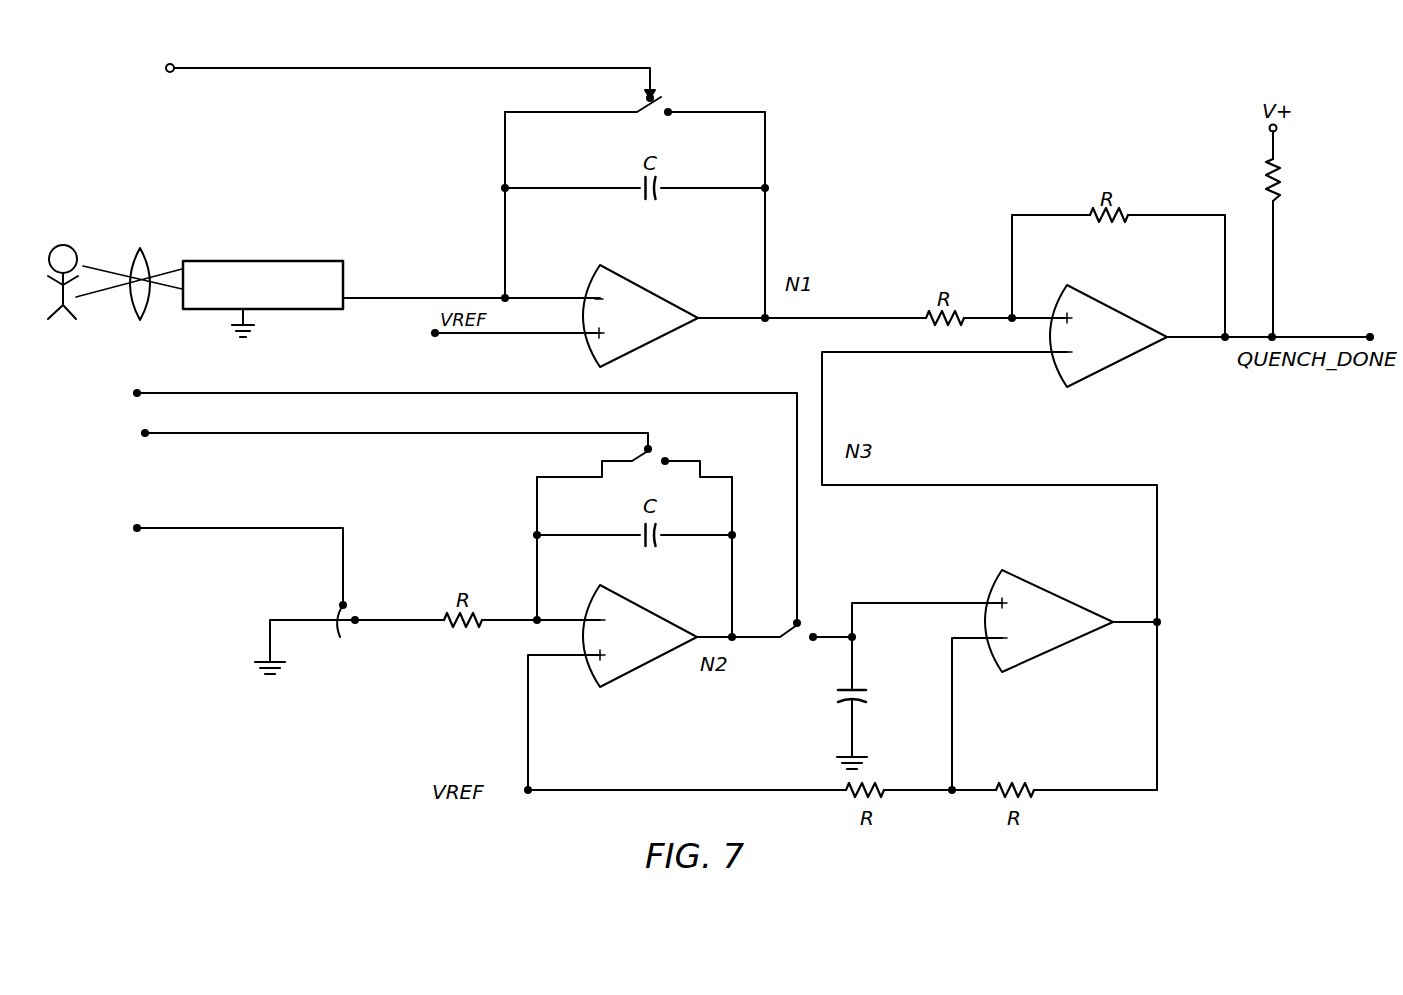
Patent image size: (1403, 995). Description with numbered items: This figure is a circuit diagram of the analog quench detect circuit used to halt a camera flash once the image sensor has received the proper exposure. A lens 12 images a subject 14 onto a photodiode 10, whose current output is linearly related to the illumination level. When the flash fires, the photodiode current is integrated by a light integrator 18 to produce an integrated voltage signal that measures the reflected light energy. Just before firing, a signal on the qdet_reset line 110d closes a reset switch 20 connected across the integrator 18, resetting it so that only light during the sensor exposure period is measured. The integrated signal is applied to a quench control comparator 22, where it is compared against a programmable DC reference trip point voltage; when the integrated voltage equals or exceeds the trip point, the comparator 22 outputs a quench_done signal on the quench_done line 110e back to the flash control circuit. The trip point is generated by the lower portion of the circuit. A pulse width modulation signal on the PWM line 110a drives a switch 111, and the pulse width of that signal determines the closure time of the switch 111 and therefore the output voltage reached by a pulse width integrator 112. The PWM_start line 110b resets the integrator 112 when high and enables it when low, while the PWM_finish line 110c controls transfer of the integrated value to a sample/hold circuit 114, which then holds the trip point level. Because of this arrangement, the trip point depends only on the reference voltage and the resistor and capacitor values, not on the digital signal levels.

The photodiode 10 is at (250, 261).
The lens 12 is at (150, 258).
The subject 14 is at (78, 250).
The light integrator 18 is at (782, 182).
The reset switch 20 is at (638, 103).
The quench control comparator 22 is at (1100, 372).
The pulse_width_modulation (PWM) line 110a is at (293, 528).
The PWM_start line 110b is at (417, 433).
The PWM_finish line 110c is at (410, 393).
The qdet_reset line 110d is at (462, 68).
The quench_done line 110e is at (1310, 337).
The switch 111 is at (313, 637).
The pulse width integrator 112 is at (620, 677).
The sample/hold circuit 114 is at (1045, 660).